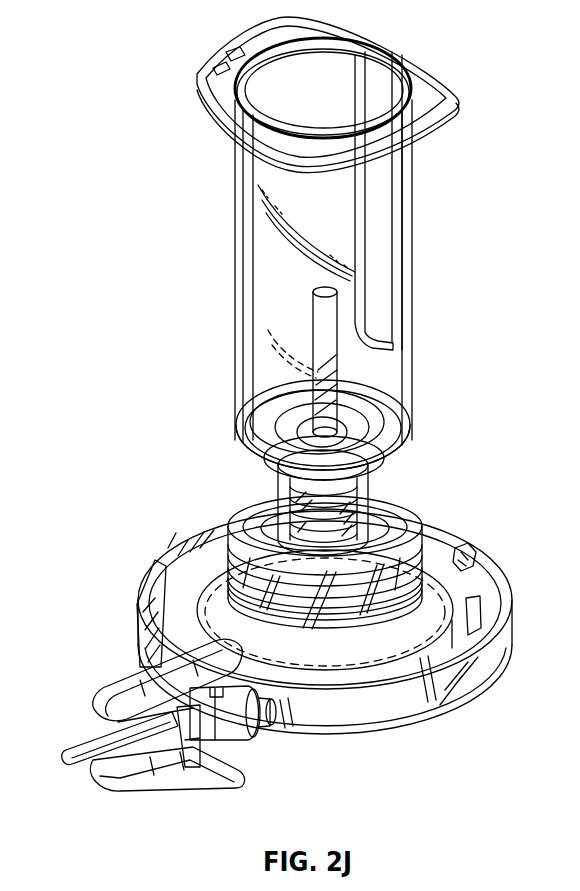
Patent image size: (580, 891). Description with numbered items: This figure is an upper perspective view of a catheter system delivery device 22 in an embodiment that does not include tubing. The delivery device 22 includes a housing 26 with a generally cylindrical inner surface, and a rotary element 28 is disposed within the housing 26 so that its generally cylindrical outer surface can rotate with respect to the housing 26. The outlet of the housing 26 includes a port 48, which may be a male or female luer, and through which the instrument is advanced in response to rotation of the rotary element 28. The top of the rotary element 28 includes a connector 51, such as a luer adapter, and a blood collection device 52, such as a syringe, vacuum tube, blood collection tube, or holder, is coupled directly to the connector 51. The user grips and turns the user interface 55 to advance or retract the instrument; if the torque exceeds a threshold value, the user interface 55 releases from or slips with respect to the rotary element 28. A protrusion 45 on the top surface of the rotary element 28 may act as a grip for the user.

The delivery device 22 is at (82, 252).
The housing 26 is at (463, 687).
The rotary element 28 is at (477, 600).
The protrusion 45 is at (402, 513).
The port 48 is at (273, 703).
The connector 51 is at (380, 518).
The blood collection device 52 is at (410, 300).
The user interface 55 is at (382, 600).